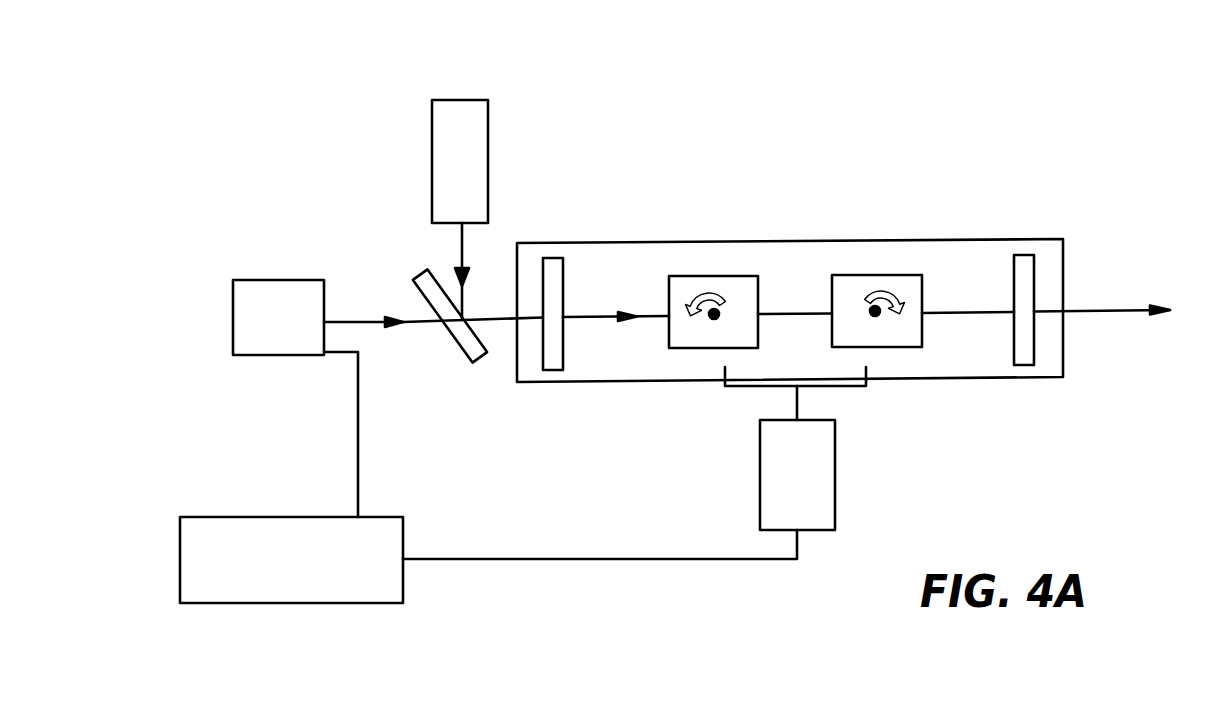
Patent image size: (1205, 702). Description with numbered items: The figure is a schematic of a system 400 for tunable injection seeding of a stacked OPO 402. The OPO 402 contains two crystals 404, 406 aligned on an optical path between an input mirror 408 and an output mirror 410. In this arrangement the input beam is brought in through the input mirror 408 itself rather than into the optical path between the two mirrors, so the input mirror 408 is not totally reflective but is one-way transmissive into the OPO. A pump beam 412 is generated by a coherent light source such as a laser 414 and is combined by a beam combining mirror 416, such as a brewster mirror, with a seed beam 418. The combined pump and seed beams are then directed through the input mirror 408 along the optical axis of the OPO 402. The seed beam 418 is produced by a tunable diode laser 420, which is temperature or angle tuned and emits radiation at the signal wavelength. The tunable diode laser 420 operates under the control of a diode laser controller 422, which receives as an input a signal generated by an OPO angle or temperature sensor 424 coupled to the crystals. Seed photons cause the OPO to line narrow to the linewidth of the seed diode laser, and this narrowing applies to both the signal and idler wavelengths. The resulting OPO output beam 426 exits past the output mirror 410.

The system 400 is at (622, 173).
The stacked OPO 402 is at (783, 242).
The crystal 404 is at (734, 276).
The crystal 406 is at (900, 276).
The input mirror 408 is at (562, 295).
The output mirror 410 is at (1035, 268).
The pump beam 412 is at (462, 241).
The laser 414 is at (490, 145).
The beam combining mirror 416 is at (456, 350).
The seed beam 418 is at (352, 318).
The tunable diode laser 420 is at (265, 280).
The diode laser controller 422 is at (238, 517).
The OPO angle or temperature sensor 424 is at (835, 478).
The OPO output beam 426 is at (1098, 308).